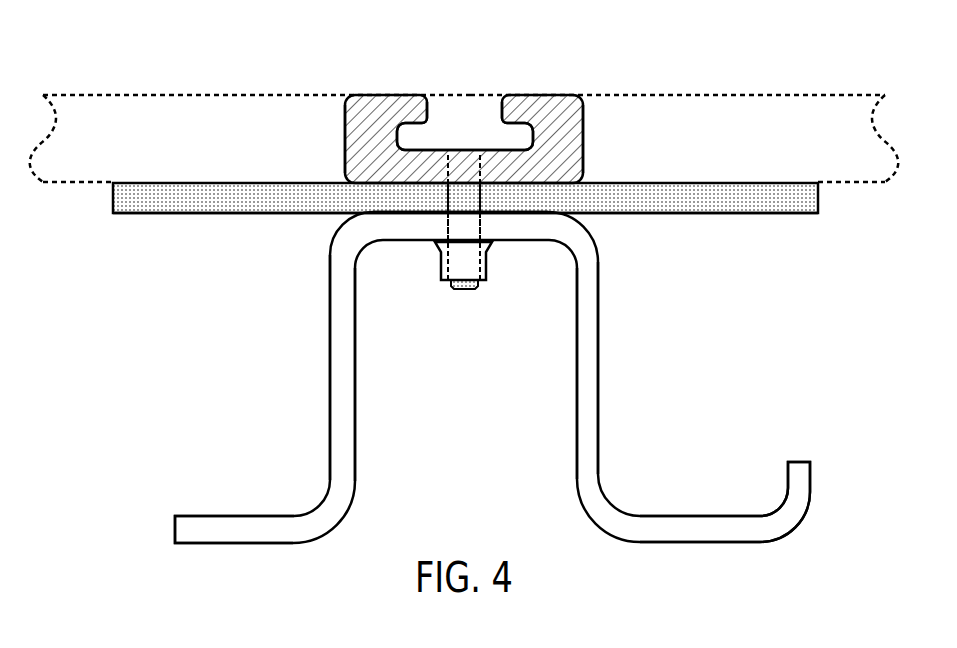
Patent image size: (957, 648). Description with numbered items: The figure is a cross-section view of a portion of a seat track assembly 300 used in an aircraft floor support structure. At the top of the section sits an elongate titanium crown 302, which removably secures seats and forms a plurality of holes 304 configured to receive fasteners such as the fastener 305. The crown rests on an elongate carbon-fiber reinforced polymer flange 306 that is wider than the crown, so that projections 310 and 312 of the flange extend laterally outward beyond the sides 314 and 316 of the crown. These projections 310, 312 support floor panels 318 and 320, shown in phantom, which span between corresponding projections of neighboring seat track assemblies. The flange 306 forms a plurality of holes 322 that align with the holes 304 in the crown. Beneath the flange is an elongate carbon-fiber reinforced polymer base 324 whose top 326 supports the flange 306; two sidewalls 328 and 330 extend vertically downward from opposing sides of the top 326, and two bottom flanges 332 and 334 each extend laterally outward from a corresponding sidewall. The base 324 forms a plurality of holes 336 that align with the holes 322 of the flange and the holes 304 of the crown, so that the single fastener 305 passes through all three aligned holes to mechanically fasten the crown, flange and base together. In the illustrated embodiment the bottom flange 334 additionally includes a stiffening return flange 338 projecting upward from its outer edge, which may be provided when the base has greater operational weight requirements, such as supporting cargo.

The seat track assembly 300 is at (145, 43).
The elongate titanium crown 302 is at (394, 95).
The holes 304 is at (472, 148).
The fastener 305 is at (460, 293).
The elongate CFRP flange 306 is at (112, 197).
The projection 310 is at (222, 216).
The projection 312 is at (701, 215).
The side 314 is at (343, 139).
The side 316 is at (587, 139).
The floor panel 318 is at (247, 95).
The floor panel 320 is at (763, 95).
The holes 322 is at (446, 200).
The elongate CFRP base 324 is at (578, 418).
The top 326 is at (519, 206).
The sidewall 328 is at (327, 390).
The sidewall 330 is at (602, 348).
The bottom flange 332 is at (250, 543).
The bottom flange 334 is at (707, 543).
The holes 336 is at (446, 225).
The stiffening return flange 338 is at (810, 502).